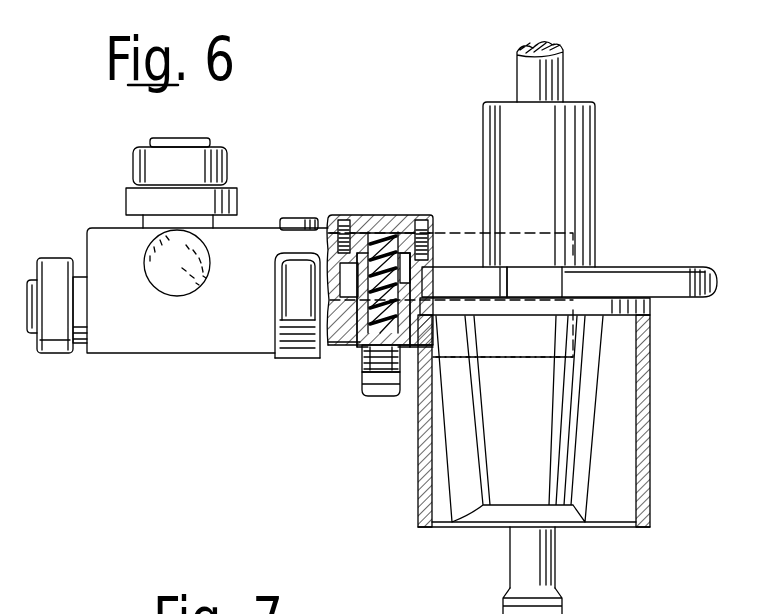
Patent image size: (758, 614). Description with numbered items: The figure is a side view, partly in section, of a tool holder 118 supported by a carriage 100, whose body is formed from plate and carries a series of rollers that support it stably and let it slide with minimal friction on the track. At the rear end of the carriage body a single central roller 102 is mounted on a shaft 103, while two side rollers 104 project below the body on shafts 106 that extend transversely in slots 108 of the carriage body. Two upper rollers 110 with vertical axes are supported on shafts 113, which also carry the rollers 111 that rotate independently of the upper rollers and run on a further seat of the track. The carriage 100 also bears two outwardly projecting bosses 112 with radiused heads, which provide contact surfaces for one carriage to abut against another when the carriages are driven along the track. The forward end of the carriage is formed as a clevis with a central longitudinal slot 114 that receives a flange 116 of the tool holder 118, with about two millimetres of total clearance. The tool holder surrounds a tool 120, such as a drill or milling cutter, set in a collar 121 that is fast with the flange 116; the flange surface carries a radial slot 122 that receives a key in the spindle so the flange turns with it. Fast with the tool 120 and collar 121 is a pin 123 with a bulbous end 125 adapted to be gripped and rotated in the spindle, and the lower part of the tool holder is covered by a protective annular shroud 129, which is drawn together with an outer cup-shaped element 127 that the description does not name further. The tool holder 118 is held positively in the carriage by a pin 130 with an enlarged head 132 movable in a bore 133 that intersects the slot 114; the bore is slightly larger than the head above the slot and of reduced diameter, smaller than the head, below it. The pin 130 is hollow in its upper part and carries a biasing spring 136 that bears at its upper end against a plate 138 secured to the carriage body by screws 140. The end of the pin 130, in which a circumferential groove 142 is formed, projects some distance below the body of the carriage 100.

The carriage 100 is at (219, 354).
The central roller 102 is at (52, 340).
The shaft 103 is at (33, 280).
The side rollers 104 is at (292, 358).
The shafts 106 is at (272, 330).
The slots 108 is at (311, 358).
The upper rollers 110 is at (218, 161).
The rollers 111 is at (133, 200).
The bosses 112 is at (160, 283).
The shafts 113 is at (172, 143).
The central longitudinal slot 114 is at (443, 268).
The flange 116 is at (680, 280).
The tool holder 118 is at (612, 152).
The tool 120 is at (293, 218).
The collar 121 is at (498, 127).
The radial slot 122 is at (512, 280).
The pin 123 is at (543, 560).
The bulbous end 125 is at (558, 612).
The cup 127 is at (645, 490).
The protective annular shroud 129 is at (597, 420).
The pin 130 is at (413, 357).
The enlarged head 132 is at (358, 217).
The bore 133 is at (360, 367).
The biasing spring 136 is at (380, 217).
The plate 138 is at (392, 217).
The screws 140 is at (340, 217).
The circumferential groove 142 is at (380, 397).